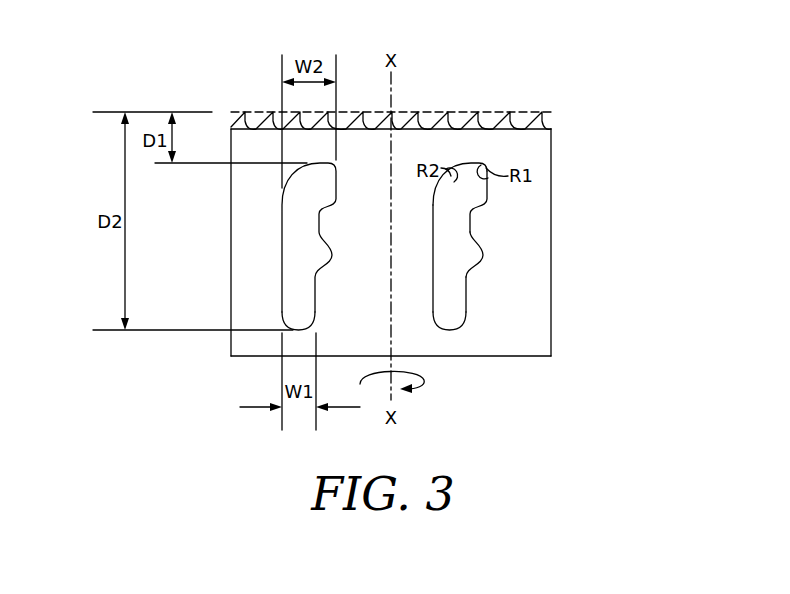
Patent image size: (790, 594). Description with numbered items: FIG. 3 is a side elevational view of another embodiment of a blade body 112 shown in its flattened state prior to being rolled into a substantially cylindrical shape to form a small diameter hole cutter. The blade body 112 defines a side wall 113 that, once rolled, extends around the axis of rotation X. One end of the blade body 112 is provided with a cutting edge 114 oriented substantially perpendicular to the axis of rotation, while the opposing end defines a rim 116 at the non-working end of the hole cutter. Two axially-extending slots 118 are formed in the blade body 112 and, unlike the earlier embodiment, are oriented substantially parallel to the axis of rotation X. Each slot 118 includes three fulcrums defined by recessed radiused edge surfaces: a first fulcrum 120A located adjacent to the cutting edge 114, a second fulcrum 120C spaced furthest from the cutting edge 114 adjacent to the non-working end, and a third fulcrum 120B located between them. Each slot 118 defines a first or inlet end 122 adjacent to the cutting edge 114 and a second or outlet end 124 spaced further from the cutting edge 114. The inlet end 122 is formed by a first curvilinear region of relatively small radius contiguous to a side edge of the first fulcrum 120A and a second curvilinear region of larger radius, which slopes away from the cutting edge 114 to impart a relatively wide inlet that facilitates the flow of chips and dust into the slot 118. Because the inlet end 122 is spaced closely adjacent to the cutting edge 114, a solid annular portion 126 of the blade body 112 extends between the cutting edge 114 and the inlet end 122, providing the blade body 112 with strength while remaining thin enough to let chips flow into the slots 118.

The blade body 112 is at (228, 218).
The side wall 113 is at (532, 329).
The cutting edge 114 is at (508, 110).
The rim 116 is at (507, 358).
The slot 118 is at (291, 256).
The first fulcrum 120A is at (488, 199).
The third fulcrum 120B is at (483, 263).
The second fulcrum 120C is at (450, 331).
The inlet end 122 is at (471, 161).
The outlet end 124 is at (298, 333).
The annular portion 126 is at (456, 153).